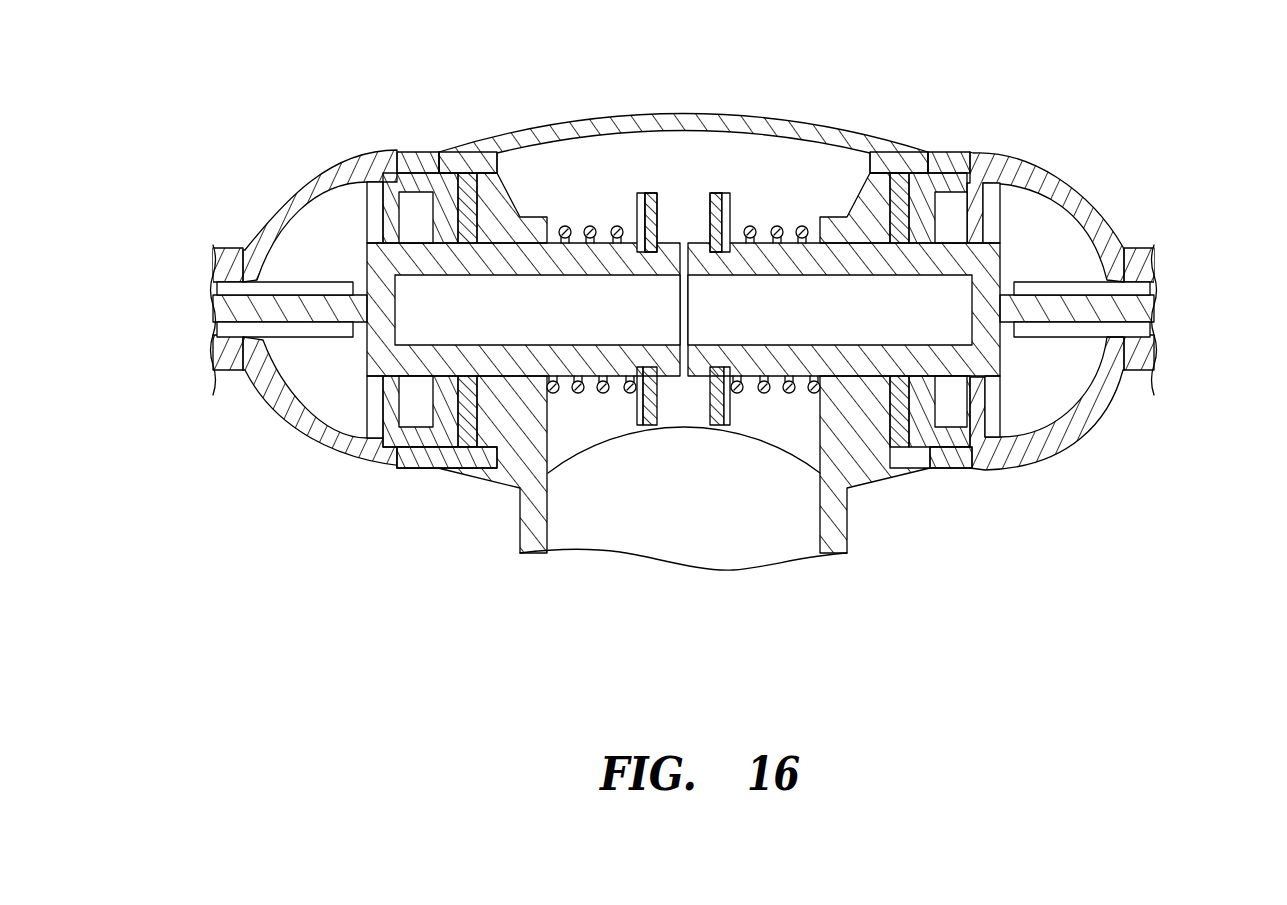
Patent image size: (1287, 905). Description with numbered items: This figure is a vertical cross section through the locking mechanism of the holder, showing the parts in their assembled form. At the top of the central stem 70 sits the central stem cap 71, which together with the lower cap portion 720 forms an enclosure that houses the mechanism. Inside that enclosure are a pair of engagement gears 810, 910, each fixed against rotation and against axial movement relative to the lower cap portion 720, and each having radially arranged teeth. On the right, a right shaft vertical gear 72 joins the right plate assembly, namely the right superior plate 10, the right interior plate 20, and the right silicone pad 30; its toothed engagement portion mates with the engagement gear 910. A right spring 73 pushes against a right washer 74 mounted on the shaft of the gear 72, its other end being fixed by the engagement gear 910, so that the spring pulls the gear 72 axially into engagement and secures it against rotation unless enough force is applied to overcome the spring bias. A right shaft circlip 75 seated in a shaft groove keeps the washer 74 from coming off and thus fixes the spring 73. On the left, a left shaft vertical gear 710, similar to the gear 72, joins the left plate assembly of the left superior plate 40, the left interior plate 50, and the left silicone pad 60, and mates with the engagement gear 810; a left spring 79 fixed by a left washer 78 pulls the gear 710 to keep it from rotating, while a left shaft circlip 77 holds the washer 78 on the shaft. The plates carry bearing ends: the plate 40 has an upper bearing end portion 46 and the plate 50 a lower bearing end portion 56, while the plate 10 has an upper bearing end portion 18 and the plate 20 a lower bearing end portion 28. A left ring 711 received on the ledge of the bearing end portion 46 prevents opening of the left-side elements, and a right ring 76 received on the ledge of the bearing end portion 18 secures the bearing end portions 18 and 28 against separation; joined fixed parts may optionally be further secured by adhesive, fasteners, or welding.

The right superior plate 10 is at (1128, 248).
The right interior plate 20 is at (1128, 372).
The right silicone pad 30 is at (1155, 310).
The left superior plate 40 is at (240, 248).
The left interior plate 50 is at (238, 372).
The left silicone pad 60 is at (213, 310).
The upper bearing end portion 46 is at (343, 156).
The lower bearing end portion 56 is at (346, 462).
The upper bearing end portion 18 is at (1026, 156).
The lower bearing end portion 28 is at (1025, 466).
The central stem 70 is at (520, 530).
The central stem cap 71 is at (743, 117).
The right shaft vertical gear 72 is at (691, 378).
The right spring 73 is at (750, 226).
The right washer 74 is at (730, 195).
The right shaft circlip 75 is at (713, 193).
The right ring 76 is at (950, 152).
The left shaft circlip 77 is at (652, 193).
The left washer 78 is at (638, 193).
The left spring 79 is at (617, 226).
The left shaft vertical gear 710 is at (676, 378).
The left ring 711 is at (418, 150).
The lower cap portion 720 is at (913, 470).
The engagement gear 810 is at (514, 150).
The engagement gear 910 is at (855, 152).